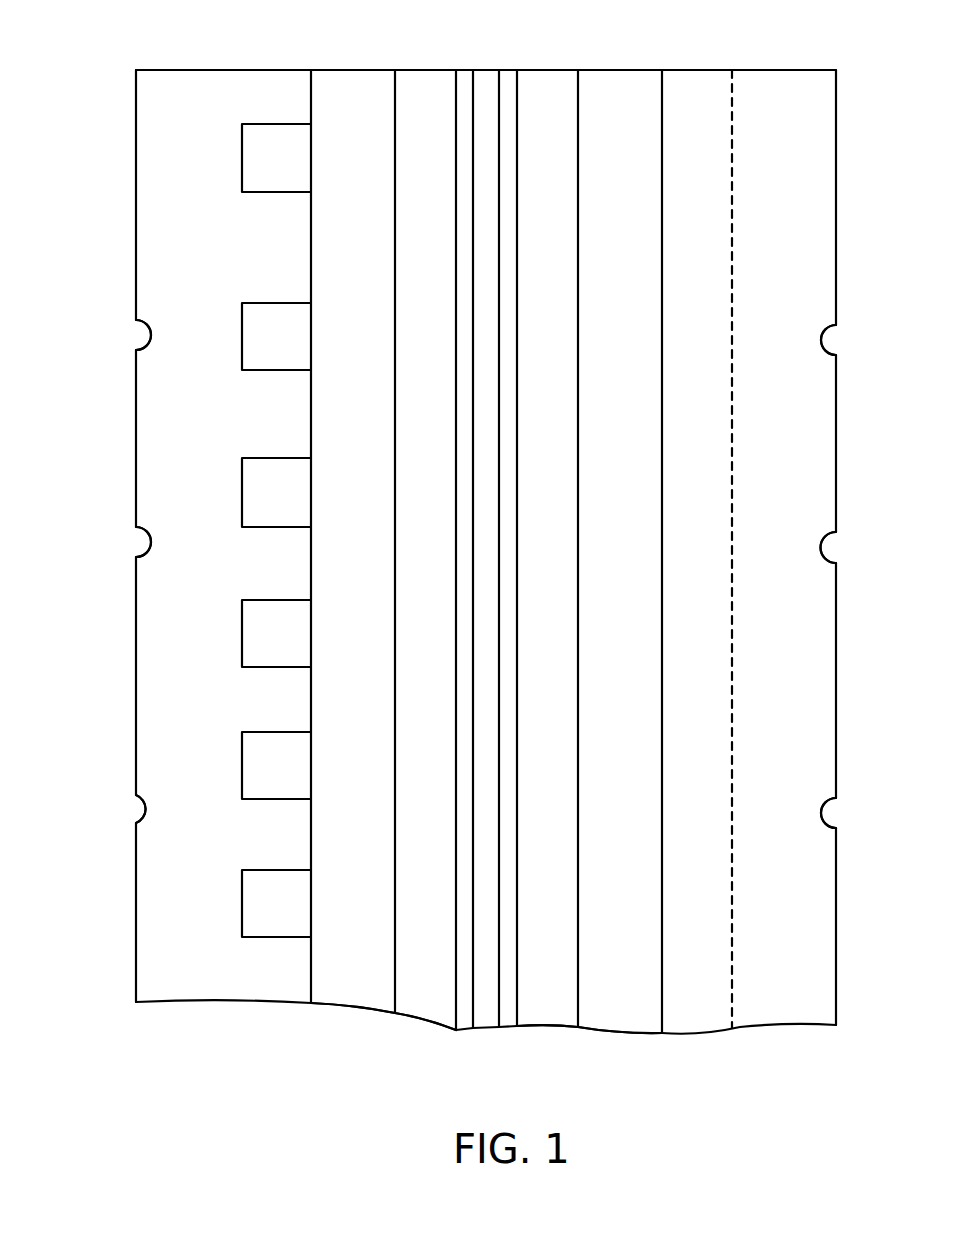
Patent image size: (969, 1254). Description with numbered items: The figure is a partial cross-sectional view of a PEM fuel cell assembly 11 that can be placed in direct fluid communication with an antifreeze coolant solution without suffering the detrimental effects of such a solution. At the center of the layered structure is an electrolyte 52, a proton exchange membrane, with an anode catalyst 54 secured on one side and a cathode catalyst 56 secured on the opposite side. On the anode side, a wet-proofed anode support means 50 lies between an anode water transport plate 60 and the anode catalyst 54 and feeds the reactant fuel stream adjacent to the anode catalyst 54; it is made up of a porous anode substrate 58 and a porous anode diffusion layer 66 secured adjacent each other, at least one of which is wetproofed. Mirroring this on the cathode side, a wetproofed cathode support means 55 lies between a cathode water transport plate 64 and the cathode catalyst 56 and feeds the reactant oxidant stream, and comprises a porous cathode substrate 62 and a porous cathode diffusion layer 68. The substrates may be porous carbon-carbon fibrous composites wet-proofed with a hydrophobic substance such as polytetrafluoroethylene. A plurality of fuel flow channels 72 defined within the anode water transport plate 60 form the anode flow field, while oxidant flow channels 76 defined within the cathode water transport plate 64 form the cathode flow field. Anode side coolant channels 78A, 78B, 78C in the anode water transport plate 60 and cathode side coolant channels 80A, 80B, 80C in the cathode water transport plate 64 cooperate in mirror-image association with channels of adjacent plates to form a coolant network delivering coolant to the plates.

The fuel cell assembly 11 is at (92, 92).
The wet-proofed anode support means 50 is at (313, 1032).
The electrolyte 52 is at (488, 82).
The anode catalyst 54 is at (467, 82).
The wetproofed cathode support means 55 is at (519, 1035).
The cathode catalyst 56 is at (508, 80).
The porous anode substrate 58 is at (347, 103).
The anode water transport plate 60 is at (192, 103).
The porous cathode substrate 62 is at (622, 97).
The cathode water transport plate 64 is at (808, 97).
The porous anode diffusion layer 66 is at (428, 92).
The porous cathode diffusion layer 68 is at (553, 93).
The fuel flow channels 72 is at (268, 162).
The oxidant flow channels 76 is at (712, 97).
The anode side coolant channel 78A is at (148, 337).
The anode side coolant channel 78B is at (150, 544).
The anode side coolant channel 78C is at (150, 810).
The cathode side coolant channel 80A is at (825, 338).
The cathode side coolant channel 80B is at (825, 548).
The cathode side coolant channel 80C is at (822, 812).